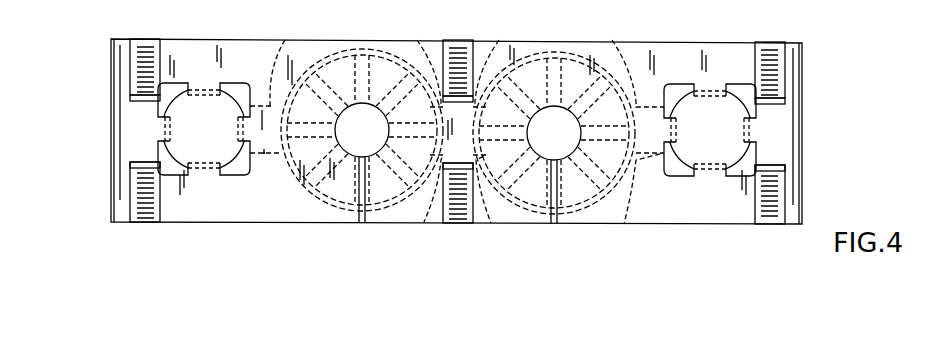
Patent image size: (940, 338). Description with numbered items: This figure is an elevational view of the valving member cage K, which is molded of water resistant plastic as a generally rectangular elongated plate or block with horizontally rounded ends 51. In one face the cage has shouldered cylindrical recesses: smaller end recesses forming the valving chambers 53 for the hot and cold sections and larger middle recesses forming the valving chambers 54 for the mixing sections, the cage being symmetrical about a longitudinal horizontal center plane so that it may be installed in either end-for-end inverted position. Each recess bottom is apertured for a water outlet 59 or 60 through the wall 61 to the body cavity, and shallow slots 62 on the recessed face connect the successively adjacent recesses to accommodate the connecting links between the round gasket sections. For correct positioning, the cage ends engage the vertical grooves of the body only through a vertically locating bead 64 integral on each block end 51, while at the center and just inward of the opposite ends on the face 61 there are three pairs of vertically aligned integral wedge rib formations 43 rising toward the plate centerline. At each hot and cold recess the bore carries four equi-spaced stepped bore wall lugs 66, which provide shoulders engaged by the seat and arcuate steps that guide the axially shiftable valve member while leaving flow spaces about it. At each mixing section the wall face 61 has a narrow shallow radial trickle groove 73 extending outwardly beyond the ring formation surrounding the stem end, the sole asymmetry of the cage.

The cage K is at (792, 39).
The wedge rib formations 43 is at (146, 48).
The rounded ends 51 is at (120, 116).
The end valving chambers 53 is at (186, 92).
The middle valving chambers 54 is at (412, 60).
The water outlet 59 is at (237, 84).
The water outlet 60 is at (368, 116).
The cage wall 61 is at (330, 52).
The shallow slots 62 is at (289, 41).
The locating bead 64 is at (112, 166).
The stepped bore wall lugs 66 is at (168, 132).
The trickle groove 73 is at (361, 223).